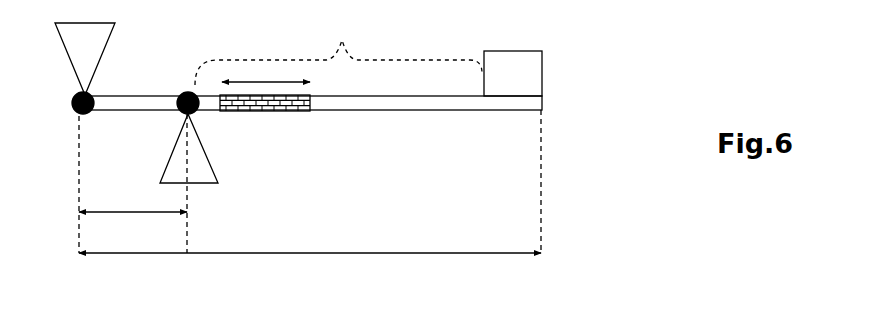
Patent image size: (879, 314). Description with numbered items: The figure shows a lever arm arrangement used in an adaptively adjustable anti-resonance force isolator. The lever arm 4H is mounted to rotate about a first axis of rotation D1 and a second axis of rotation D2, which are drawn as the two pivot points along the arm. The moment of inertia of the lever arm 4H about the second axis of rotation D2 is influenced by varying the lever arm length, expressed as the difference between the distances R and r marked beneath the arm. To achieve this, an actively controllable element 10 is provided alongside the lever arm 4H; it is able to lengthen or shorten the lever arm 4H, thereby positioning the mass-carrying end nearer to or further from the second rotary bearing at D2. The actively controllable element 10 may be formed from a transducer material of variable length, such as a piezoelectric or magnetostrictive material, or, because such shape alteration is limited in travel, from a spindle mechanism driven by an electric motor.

The first axis of rotation D1 is at (76, 112).
The second axis of rotation D2 is at (182, 93).
The actively controllable element 10 is at (280, 111).
The lever arm 4H is at (338, 42).
The distance r is at (133, 235).
The distance R is at (310, 271).